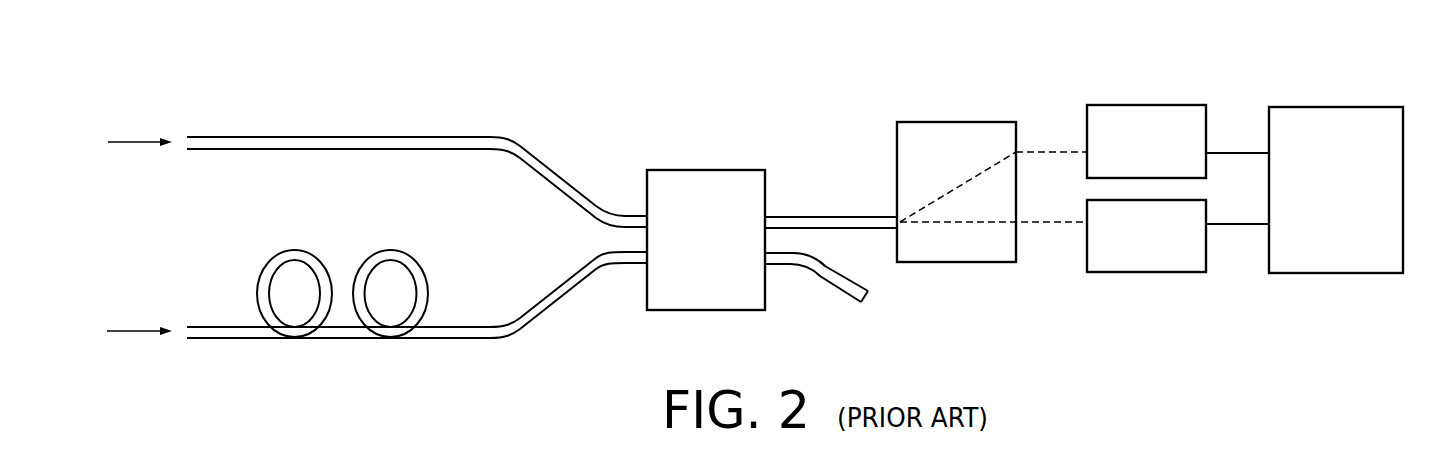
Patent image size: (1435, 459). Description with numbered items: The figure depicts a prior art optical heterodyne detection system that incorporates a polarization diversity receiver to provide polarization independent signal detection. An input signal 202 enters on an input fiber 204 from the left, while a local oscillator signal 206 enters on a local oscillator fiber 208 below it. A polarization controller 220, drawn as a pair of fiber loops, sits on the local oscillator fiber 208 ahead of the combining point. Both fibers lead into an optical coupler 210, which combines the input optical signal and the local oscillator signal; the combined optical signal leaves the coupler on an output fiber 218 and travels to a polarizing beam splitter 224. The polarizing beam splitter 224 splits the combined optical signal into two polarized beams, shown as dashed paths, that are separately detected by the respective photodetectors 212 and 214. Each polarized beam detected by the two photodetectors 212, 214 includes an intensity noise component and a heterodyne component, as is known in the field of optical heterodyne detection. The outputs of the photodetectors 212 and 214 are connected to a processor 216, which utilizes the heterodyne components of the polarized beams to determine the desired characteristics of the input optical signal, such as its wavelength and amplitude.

The input signal 202 is at (290, 121).
The input optical fiber / waveguide 204 is at (503, 137).
The local oscillator signal 206 is at (200, 408).
The local oscillator fiber 208 is at (500, 339).
The optical coupler 210 is at (707, 170).
The photodetector 212 is at (1147, 105).
The photodetector 214 is at (1145, 272).
The processor 216 is at (1344, 107).
The coupler output fiber 218 is at (826, 216).
The polarization controller 220 is at (341, 244).
The polarizing beam splitter 224 is at (957, 122).